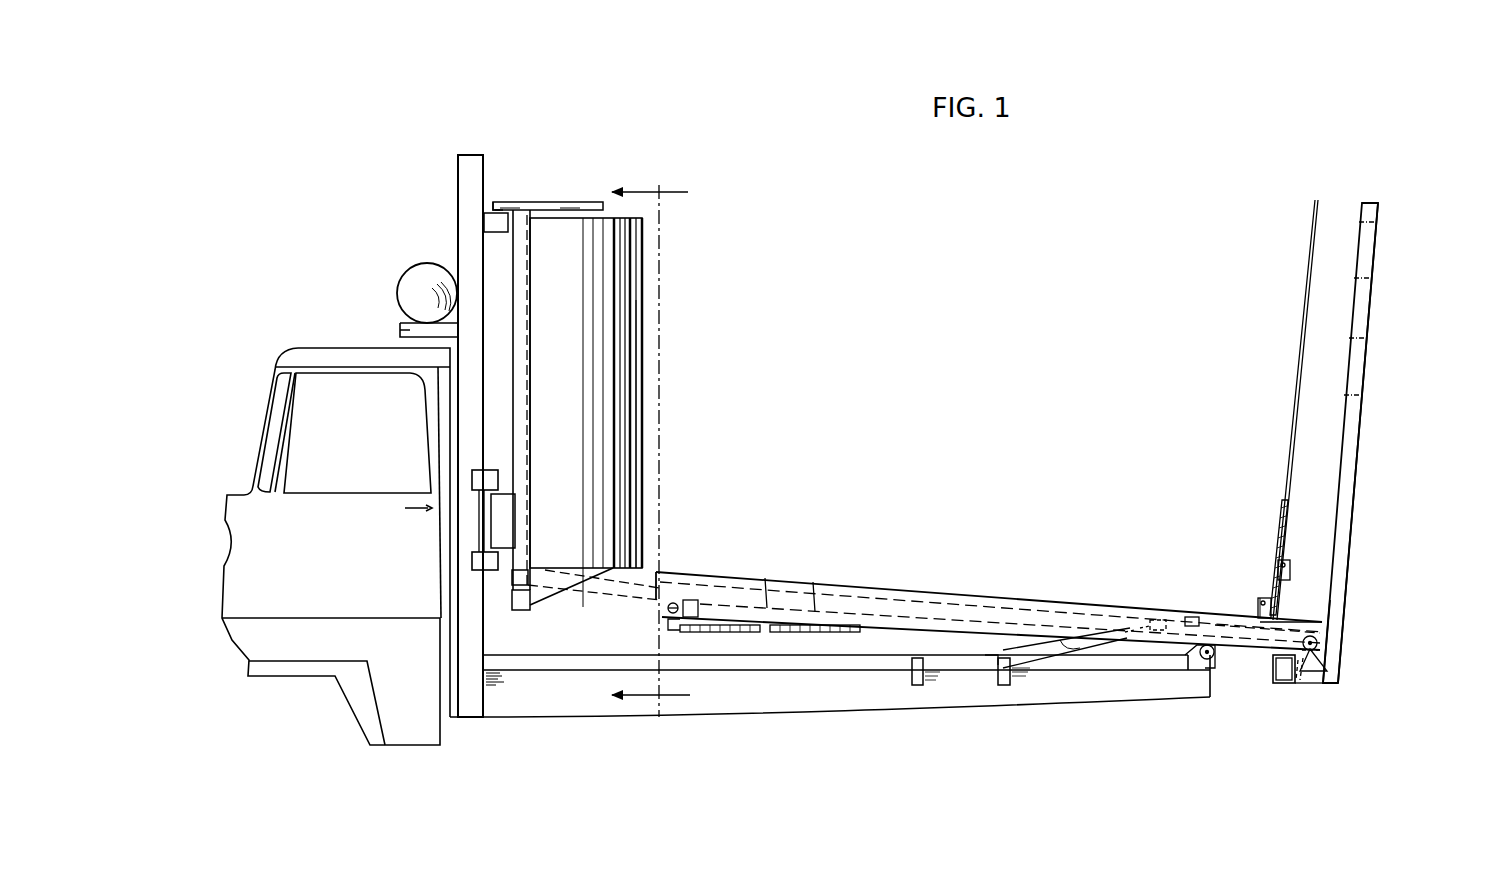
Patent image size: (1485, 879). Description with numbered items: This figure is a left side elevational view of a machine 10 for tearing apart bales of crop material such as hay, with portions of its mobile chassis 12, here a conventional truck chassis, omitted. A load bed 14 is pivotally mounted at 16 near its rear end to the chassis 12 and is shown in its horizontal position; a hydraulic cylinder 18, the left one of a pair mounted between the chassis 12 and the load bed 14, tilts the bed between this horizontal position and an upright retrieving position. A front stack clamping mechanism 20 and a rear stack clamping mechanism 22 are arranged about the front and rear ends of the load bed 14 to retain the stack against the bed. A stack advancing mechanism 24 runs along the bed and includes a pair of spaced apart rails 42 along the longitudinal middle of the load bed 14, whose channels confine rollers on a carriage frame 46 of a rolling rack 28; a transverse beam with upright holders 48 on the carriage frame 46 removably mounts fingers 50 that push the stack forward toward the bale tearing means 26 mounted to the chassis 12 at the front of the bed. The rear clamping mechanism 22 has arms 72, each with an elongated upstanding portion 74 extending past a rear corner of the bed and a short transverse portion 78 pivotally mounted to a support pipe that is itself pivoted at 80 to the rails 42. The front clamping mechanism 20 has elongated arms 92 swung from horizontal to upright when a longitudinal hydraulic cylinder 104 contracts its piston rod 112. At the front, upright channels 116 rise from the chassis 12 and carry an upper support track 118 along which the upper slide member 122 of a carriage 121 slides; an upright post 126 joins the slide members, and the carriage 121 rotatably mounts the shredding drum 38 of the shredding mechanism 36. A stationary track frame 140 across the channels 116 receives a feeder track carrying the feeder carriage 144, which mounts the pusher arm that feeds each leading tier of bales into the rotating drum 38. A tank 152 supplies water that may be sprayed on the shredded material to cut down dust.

The machine for tearing apart bales of crop material 10 is at (943, 177).
The mobile chassis 12 is at (718, 712).
The load bed 14 is at (908, 590).
The pivotal mounting of load bed 16 is at (1212, 655).
The hydraulic cylinder 18 is at (1075, 620).
The front stack clamping mechanism 20 is at (757, 638).
The rear stack clamping mechanism 22 is at (1374, 390).
The stack advancing mechanism 24 is at (1216, 605).
The bale tearing means 26 is at (686, 374).
The rolling rack 28 is at (1266, 462).
The shredding mechanism 36 is at (656, 537).
The shredding drum 38 is at (659, 448).
The rails 42 is at (628, 584).
The carriage frame 46 is at (1165, 626).
The transverse beam / upright holders 48 is at (1292, 577).
The fingers 50 is at (1298, 378).
The arms 72 is at (1356, 497).
The upstanding portion 74 is at (1337, 651).
The short transverse portion 78 is at (1310, 685).
The pivotal mounting of support pipe 80 is at (1323, 668).
The elongated arms 92 is at (1040, 628).
The longitudinal hydraulic cylinder 104 is at (830, 632).
The piston rod 112 is at (730, 632).
The upright channels 116 is at (488, 175).
The upper support track 118 is at (497, 235).
The carriage 121 is at (549, 201).
The upper slide member 122 is at (495, 202).
The upright post 126 is at (520, 340).
The stationary track frame 140 is at (478, 474).
The feeder carriage 144 is at (515, 528).
The tank 152 is at (396, 296).